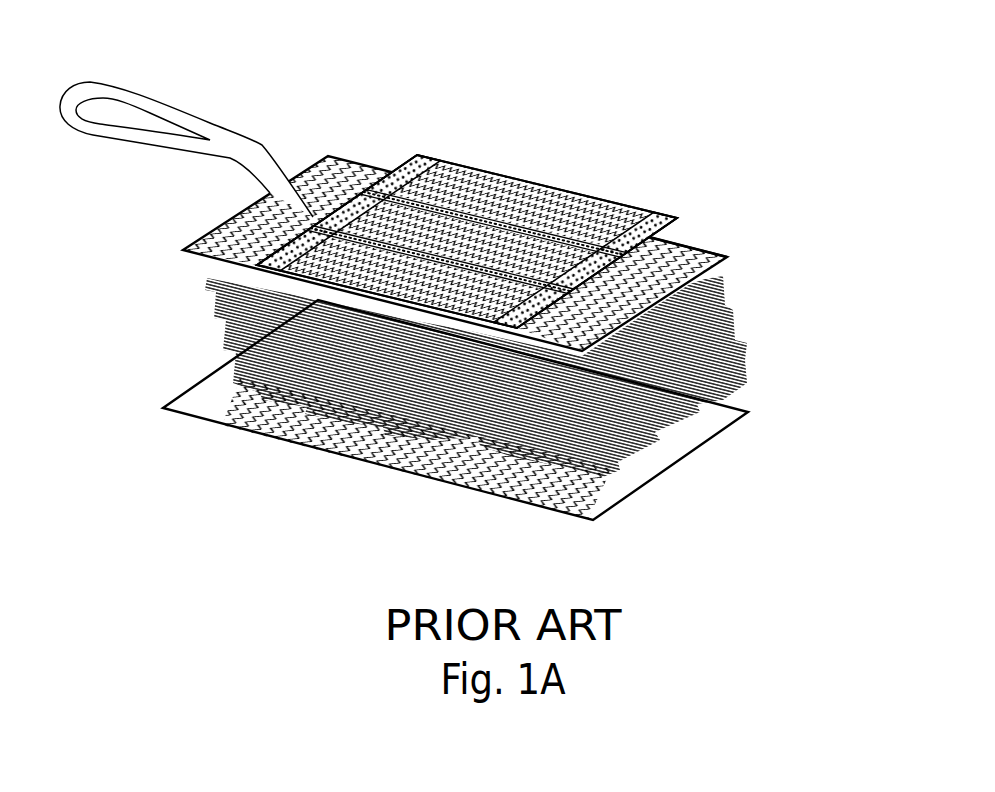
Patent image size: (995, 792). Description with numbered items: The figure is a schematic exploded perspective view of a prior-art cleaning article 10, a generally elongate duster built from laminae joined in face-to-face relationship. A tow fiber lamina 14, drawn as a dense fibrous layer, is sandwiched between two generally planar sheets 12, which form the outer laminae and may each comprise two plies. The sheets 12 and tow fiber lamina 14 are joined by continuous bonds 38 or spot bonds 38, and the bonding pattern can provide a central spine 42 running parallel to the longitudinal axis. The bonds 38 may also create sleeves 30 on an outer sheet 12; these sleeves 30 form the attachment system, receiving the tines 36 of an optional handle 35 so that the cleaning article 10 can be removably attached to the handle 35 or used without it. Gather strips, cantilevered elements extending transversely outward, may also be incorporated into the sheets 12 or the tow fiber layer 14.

The cleaning article 10 is at (444, 294).
The generally planar sheet 12 is at (495, 296).
The tow fiber lamina 14 is at (747, 383).
The sleeves 30 is at (467, 182).
The handle 35 is at (120, 138).
The tines 36 is at (333, 180).
The bonds 38 is at (412, 222).
The central spine 42 is at (638, 210).